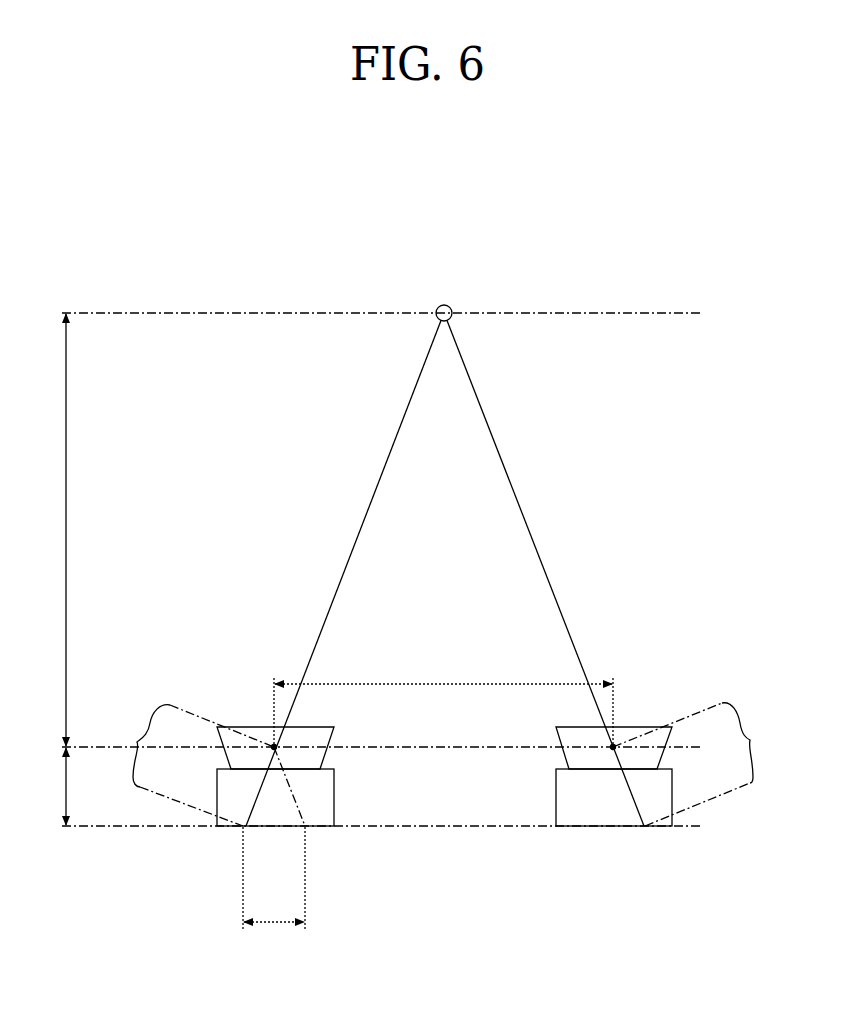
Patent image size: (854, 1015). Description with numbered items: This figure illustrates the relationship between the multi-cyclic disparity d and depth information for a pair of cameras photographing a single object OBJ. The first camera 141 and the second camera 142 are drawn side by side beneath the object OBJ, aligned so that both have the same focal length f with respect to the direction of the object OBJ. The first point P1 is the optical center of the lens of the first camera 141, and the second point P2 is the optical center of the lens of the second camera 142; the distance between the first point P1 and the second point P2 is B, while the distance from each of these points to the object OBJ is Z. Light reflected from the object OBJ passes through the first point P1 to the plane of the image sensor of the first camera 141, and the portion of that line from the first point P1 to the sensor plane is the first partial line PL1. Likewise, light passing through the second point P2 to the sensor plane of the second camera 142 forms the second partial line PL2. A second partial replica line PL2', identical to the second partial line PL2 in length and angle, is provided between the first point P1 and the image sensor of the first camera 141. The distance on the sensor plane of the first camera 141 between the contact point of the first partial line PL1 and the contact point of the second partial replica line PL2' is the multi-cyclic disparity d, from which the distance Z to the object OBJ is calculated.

The first camera 141 is at (217, 800).
The second camera 142 is at (556, 800).
The object OBJ is at (443, 305).
The first point P1 is at (278, 772).
The second point P2 is at (612, 752).
The first partial line PL1 is at (183, 765).
The second partial line PL2 is at (705, 764).
The second partial replica line PL2' is at (314, 826).
The distance to the object Z is at (57, 530).
The focal length f is at (58, 786).
The distance between the first point and the second point B is at (443, 701).
The multi-cyclic disparity d is at (274, 889).